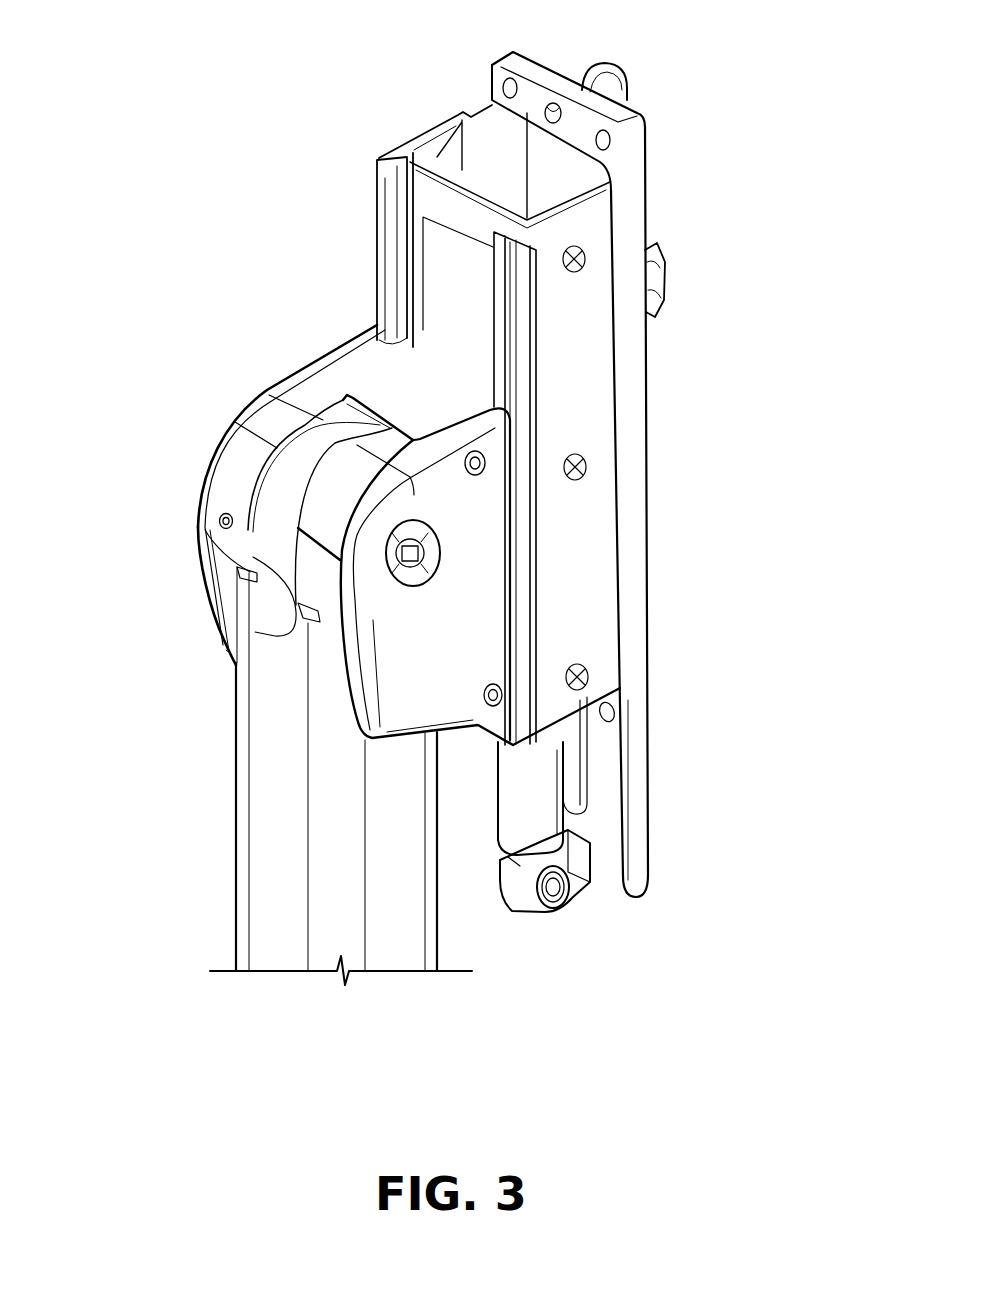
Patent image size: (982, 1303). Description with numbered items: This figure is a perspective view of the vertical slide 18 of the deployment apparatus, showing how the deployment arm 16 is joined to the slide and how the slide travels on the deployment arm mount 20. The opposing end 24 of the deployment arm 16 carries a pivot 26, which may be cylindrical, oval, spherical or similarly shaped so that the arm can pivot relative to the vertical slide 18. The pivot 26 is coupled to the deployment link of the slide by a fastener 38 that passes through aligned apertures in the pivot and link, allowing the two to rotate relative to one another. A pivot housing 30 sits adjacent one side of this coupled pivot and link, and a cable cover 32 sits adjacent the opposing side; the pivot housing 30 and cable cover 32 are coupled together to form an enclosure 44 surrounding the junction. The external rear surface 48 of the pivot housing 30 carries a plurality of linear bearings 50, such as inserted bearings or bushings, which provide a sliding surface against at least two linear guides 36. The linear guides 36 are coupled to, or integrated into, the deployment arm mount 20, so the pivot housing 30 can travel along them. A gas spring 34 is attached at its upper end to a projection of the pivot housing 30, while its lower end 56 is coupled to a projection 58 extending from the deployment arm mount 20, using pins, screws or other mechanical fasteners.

The deployment arm 16 is at (243, 865).
The vertical slide 18 is at (139, 135).
The deployment arm mount 20 is at (633, 213).
The opposing end 24 is at (243, 598).
The pivot 26 is at (258, 543).
The pivot housing 30 is at (217, 463).
The cable cover 32 is at (483, 627).
The gas spring 34 is at (543, 825).
The linear guides 36 is at (524, 459).
The fastener 38 is at (423, 553).
The enclosure 44 is at (377, 375).
The external rear surface 48 is at (437, 340).
The linear bearings 50 is at (380, 322).
The lower end 56 is at (553, 893).
The projection 58 is at (580, 877).